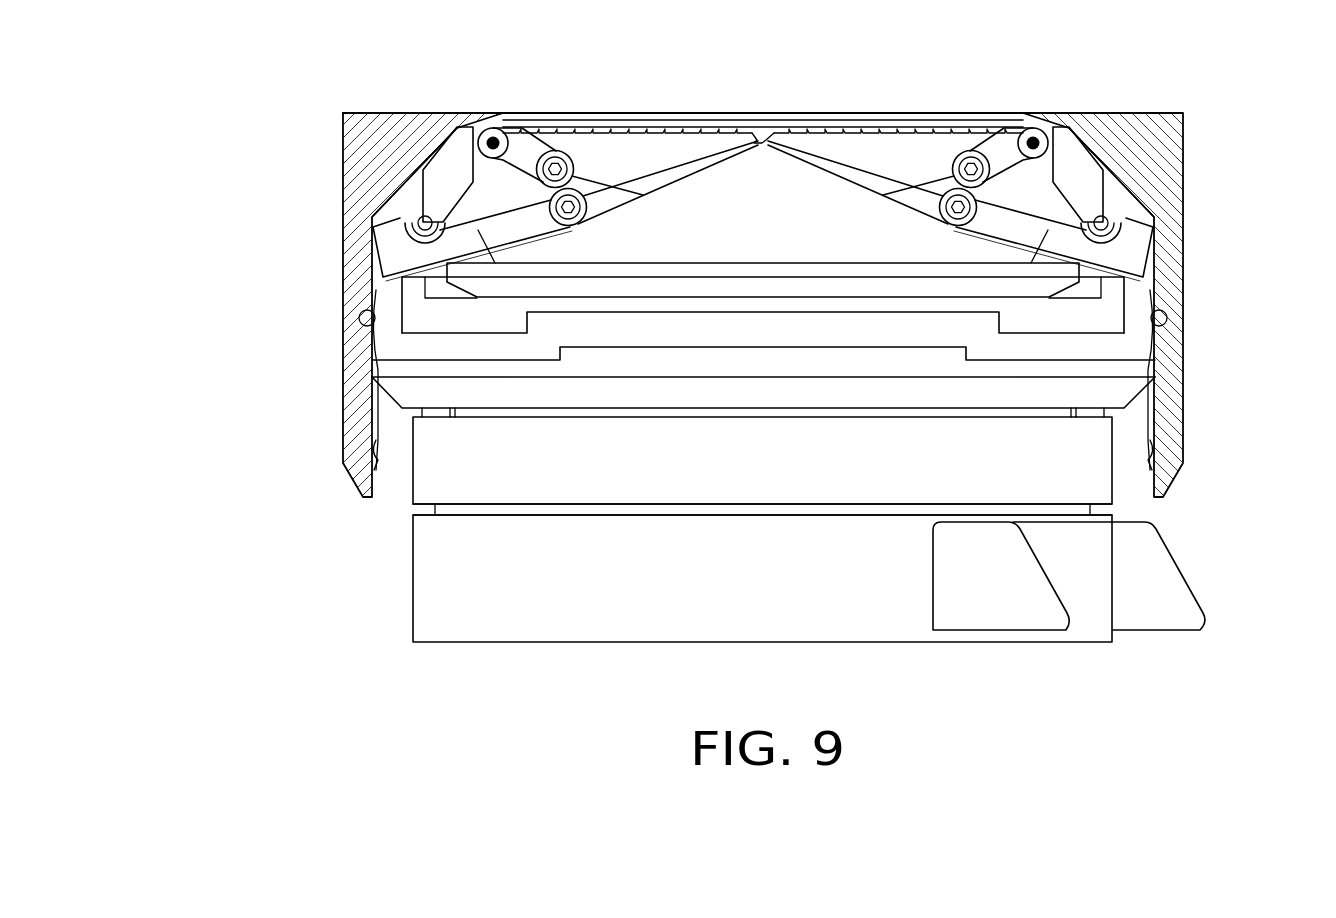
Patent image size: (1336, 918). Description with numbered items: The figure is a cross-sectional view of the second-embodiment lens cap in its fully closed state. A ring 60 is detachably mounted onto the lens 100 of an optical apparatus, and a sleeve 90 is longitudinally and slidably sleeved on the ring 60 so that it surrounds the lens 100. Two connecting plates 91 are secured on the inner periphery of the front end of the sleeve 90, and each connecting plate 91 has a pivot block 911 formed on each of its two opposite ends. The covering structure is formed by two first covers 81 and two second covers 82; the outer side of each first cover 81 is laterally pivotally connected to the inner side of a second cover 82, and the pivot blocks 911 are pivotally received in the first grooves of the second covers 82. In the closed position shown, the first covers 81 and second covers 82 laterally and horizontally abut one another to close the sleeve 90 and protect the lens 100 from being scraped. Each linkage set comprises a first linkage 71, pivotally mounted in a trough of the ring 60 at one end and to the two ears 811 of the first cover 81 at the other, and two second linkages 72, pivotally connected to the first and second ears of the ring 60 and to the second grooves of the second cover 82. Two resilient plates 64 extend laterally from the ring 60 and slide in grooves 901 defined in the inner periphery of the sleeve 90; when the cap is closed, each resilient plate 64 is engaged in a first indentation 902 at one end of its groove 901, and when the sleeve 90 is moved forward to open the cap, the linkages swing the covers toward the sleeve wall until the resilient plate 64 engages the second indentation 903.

The sleeve 90 is at (300, 190).
The connecting plate 91 is at (1077, 150).
The pivot block 911 is at (1047, 168).
The second linkage 72 is at (1016, 185).
The first linkage 71 is at (1010, 220).
The ear 811 is at (593, 187).
The second cover 82 is at (628, 150).
The first cover 81 is at (712, 148).
The resilient plate 64 is at (1157, 303).
The first indentation 902 is at (1155, 322).
The groove 901 is at (1153, 358).
The ring 60 is at (983, 345).
The second indentation 903 is at (1158, 445).
The lens 100 is at (470, 613).